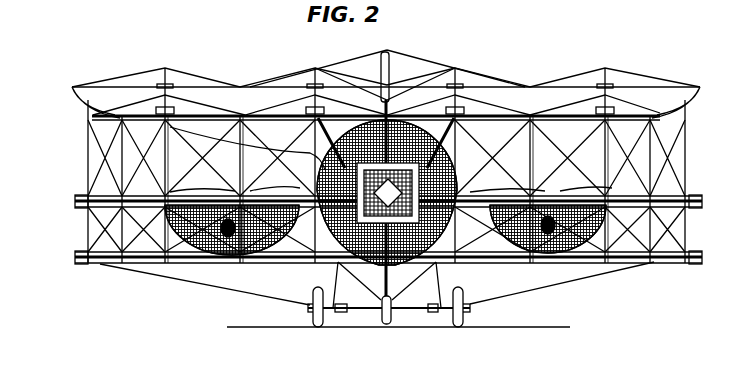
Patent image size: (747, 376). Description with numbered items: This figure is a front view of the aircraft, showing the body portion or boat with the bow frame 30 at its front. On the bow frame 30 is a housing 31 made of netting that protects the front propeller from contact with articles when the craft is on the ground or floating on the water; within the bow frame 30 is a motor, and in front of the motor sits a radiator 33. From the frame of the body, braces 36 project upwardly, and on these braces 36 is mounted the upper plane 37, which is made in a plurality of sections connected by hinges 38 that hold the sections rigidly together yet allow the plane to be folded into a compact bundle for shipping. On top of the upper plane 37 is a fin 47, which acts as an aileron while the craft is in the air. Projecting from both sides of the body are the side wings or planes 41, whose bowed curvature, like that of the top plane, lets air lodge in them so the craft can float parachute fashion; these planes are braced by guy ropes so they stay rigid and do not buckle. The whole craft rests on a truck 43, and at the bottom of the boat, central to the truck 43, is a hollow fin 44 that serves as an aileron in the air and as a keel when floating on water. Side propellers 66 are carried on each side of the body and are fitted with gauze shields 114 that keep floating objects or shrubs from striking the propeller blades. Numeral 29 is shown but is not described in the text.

The right landing gear strut 29 is at (446, 262).
The bow frame 30 is at (323, 171).
The housing 31 is at (446, 168).
The radiator 33 is at (340, 252).
The braces 36 is at (386, 142).
The upper plane 37 is at (386, 84).
The hinges 38 is at (612, 82).
The wings or planes 41 is at (80, 250).
The truck 43 is at (373, 311).
The hollow fin 44 is at (396, 312).
The fin 47 is at (389, 57).
The side propellers 66 is at (177, 193).
The gauze shields 114 is at (569, 252).